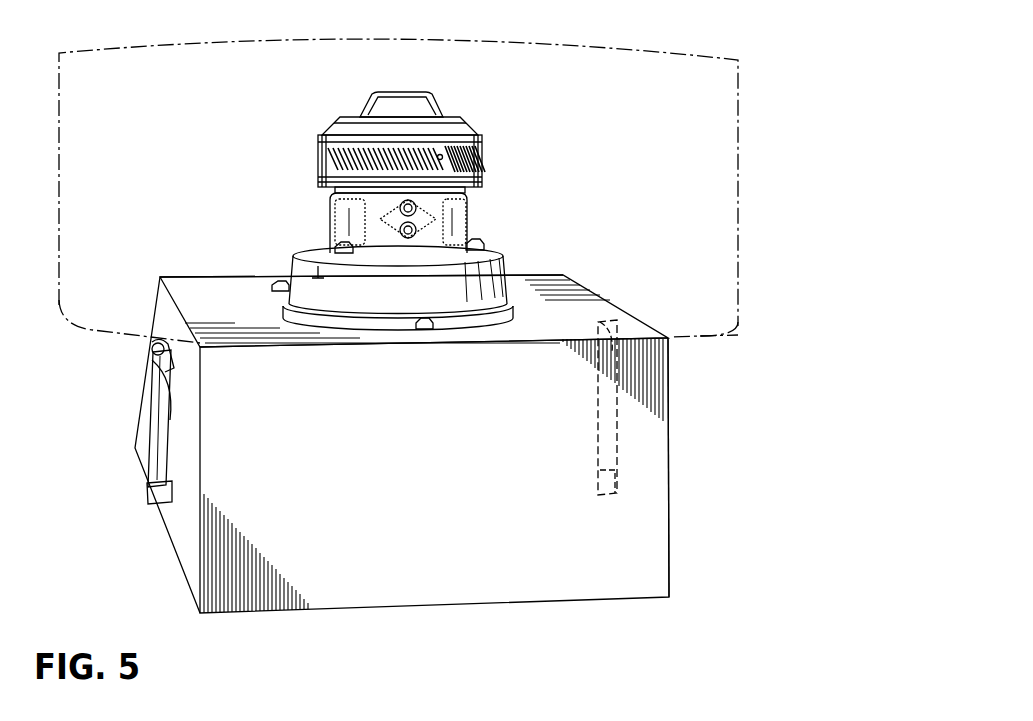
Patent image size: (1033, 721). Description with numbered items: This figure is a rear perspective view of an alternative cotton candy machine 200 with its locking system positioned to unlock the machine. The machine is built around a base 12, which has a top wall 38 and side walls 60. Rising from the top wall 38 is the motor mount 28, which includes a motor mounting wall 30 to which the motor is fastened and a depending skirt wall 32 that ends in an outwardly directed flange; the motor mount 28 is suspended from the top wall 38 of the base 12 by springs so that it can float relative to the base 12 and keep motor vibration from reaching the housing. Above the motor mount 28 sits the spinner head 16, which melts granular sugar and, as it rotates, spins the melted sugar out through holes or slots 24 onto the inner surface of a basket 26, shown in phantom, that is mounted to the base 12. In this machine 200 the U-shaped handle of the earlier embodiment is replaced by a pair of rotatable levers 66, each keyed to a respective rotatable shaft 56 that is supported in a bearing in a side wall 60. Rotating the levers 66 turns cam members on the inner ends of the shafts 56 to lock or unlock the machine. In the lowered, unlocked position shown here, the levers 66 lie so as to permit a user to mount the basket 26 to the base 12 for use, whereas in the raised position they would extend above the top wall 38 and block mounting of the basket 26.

The cotton candy machine 200 is at (764, 50).
The base 12 is at (672, 512).
The side wall 60 is at (162, 308).
The top wall 38 is at (213, 306).
The rotatable lever 66 is at (142, 432).
The rotatable shaft 56 is at (152, 348).
The spinner head 16 is at (466, 124).
The holes or slots 24 is at (482, 158).
The motor mounting wall 30 is at (490, 245).
The motor mount 28 is at (510, 270).
The depending skirt wall 32 is at (318, 270).
The basket 26 is at (746, 340).